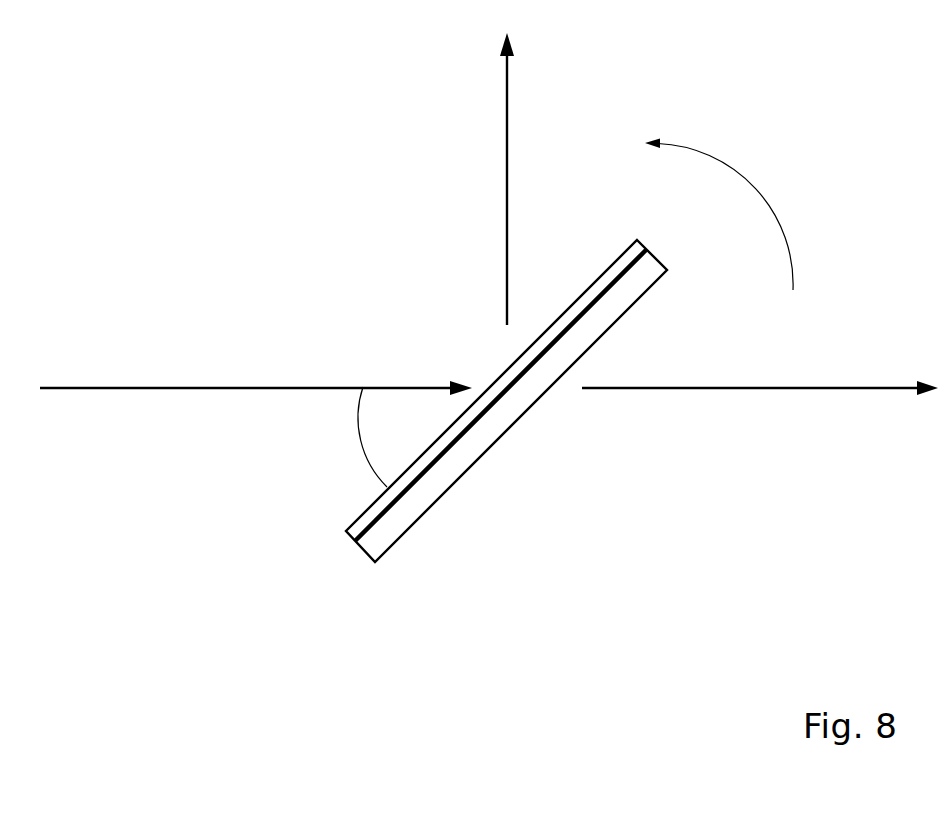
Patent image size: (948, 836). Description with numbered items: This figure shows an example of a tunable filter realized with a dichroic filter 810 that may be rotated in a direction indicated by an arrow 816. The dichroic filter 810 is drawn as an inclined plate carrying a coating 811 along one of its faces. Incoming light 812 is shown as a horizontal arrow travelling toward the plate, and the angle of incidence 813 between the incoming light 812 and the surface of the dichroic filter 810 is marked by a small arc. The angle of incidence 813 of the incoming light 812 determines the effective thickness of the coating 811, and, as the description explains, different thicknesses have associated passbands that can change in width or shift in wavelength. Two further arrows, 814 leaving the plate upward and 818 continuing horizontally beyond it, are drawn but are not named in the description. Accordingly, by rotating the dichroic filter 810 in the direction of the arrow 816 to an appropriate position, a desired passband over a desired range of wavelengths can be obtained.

The dichroic filter 810 is at (502, 435).
The coating 811 is at (362, 515).
The incoming light 812 is at (340, 387).
The angle of incidence 813 is at (362, 445).
The reflected light beam 814 is at (507, 162).
The arrow 816 is at (760, 193).
The transmitted light beam 818 is at (788, 388).